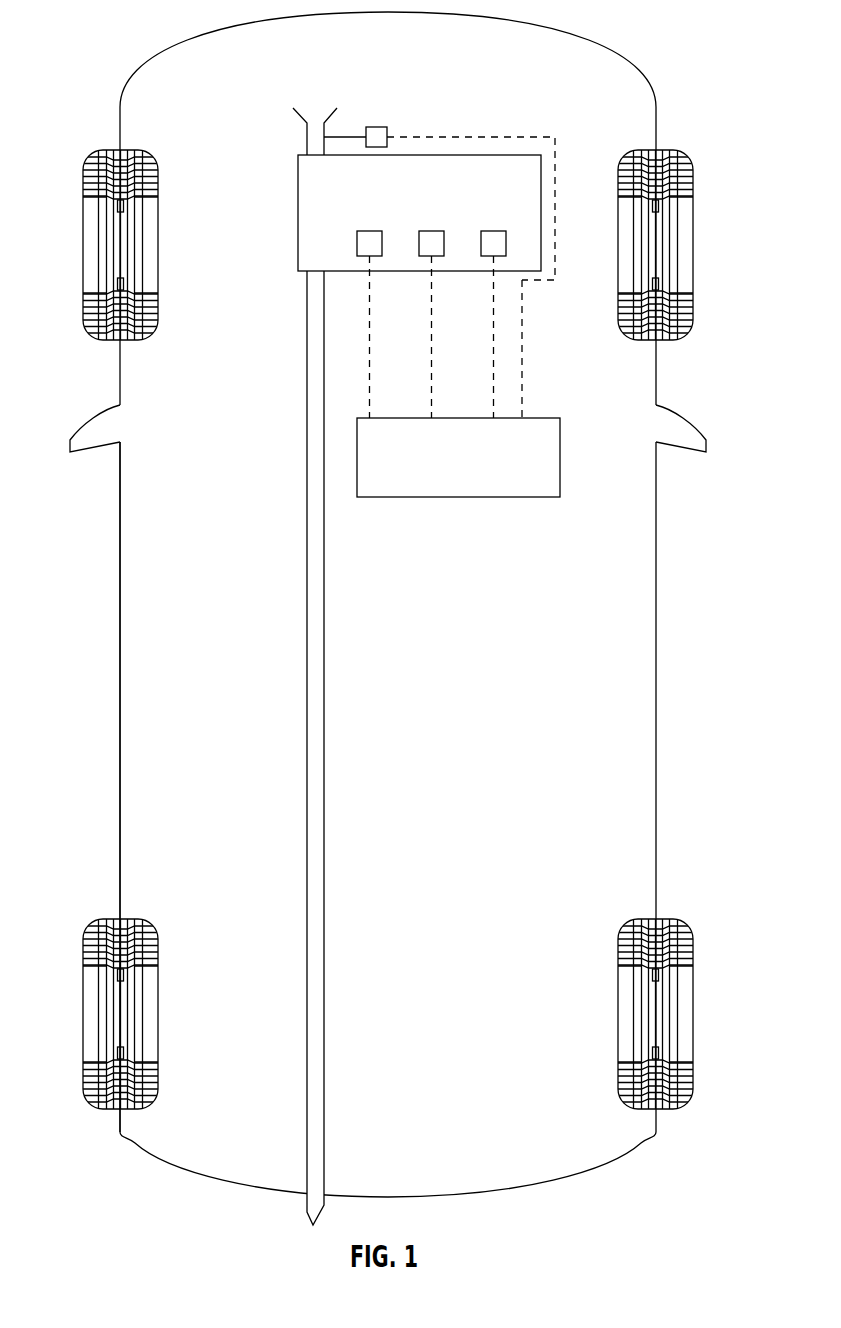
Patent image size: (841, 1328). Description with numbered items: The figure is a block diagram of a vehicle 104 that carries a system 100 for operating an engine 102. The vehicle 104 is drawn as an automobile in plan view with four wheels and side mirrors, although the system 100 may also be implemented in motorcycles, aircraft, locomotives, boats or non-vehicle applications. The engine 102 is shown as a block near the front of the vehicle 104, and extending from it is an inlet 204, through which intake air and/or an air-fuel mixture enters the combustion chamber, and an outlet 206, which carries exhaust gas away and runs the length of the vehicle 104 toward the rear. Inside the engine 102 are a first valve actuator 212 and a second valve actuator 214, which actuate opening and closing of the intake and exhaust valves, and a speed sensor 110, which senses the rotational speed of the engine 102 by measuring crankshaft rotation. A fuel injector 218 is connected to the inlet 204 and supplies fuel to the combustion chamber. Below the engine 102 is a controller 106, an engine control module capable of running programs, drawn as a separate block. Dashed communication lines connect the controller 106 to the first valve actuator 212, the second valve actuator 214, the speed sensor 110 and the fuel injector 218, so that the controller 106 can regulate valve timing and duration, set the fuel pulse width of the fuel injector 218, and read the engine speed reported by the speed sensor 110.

The system 100 is at (195, 52).
The engine 102 is at (527, 155).
The vehicle 104 is at (120, 612).
The controller 106 is at (547, 418).
The speed sensor 110 is at (493, 231).
The inlet 204 is at (317, 115).
The outlet 206 is at (313, 592).
The first valve actuator 212 is at (368, 231).
The second valve actuator 214 is at (430, 231).
The fuel injector 218 is at (380, 127).